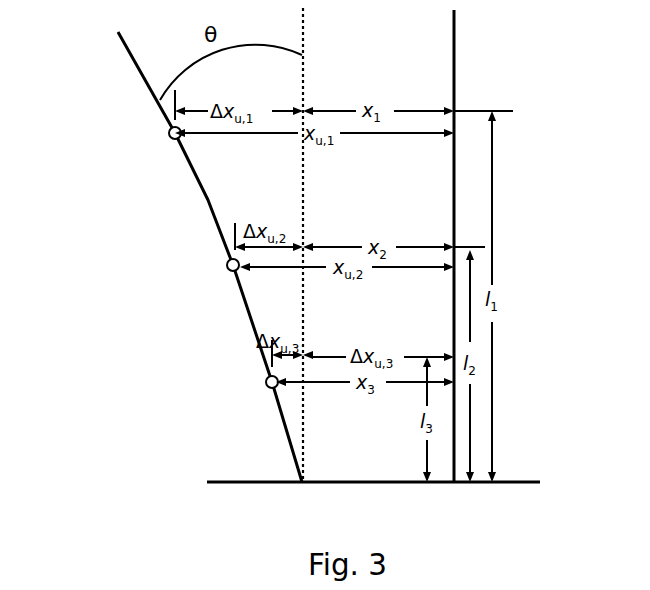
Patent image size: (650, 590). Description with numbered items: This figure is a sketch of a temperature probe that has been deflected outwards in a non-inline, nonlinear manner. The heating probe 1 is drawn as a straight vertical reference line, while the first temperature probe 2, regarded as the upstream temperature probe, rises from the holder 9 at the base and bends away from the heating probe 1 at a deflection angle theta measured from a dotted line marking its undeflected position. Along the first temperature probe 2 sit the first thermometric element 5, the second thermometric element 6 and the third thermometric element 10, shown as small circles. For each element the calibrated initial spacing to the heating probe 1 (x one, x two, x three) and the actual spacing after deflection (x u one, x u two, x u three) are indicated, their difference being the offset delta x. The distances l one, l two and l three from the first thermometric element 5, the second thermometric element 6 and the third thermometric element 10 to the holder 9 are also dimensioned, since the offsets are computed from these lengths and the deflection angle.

The heating probe 1 is at (455, 28).
The first temperature probe 2 is at (133, 60).
The first thermometric element 5 is at (169, 133).
The second thermometric element 6 is at (227, 265).
The holder 9 is at (317, 450).
The third thermometric element 10 is at (266, 382).